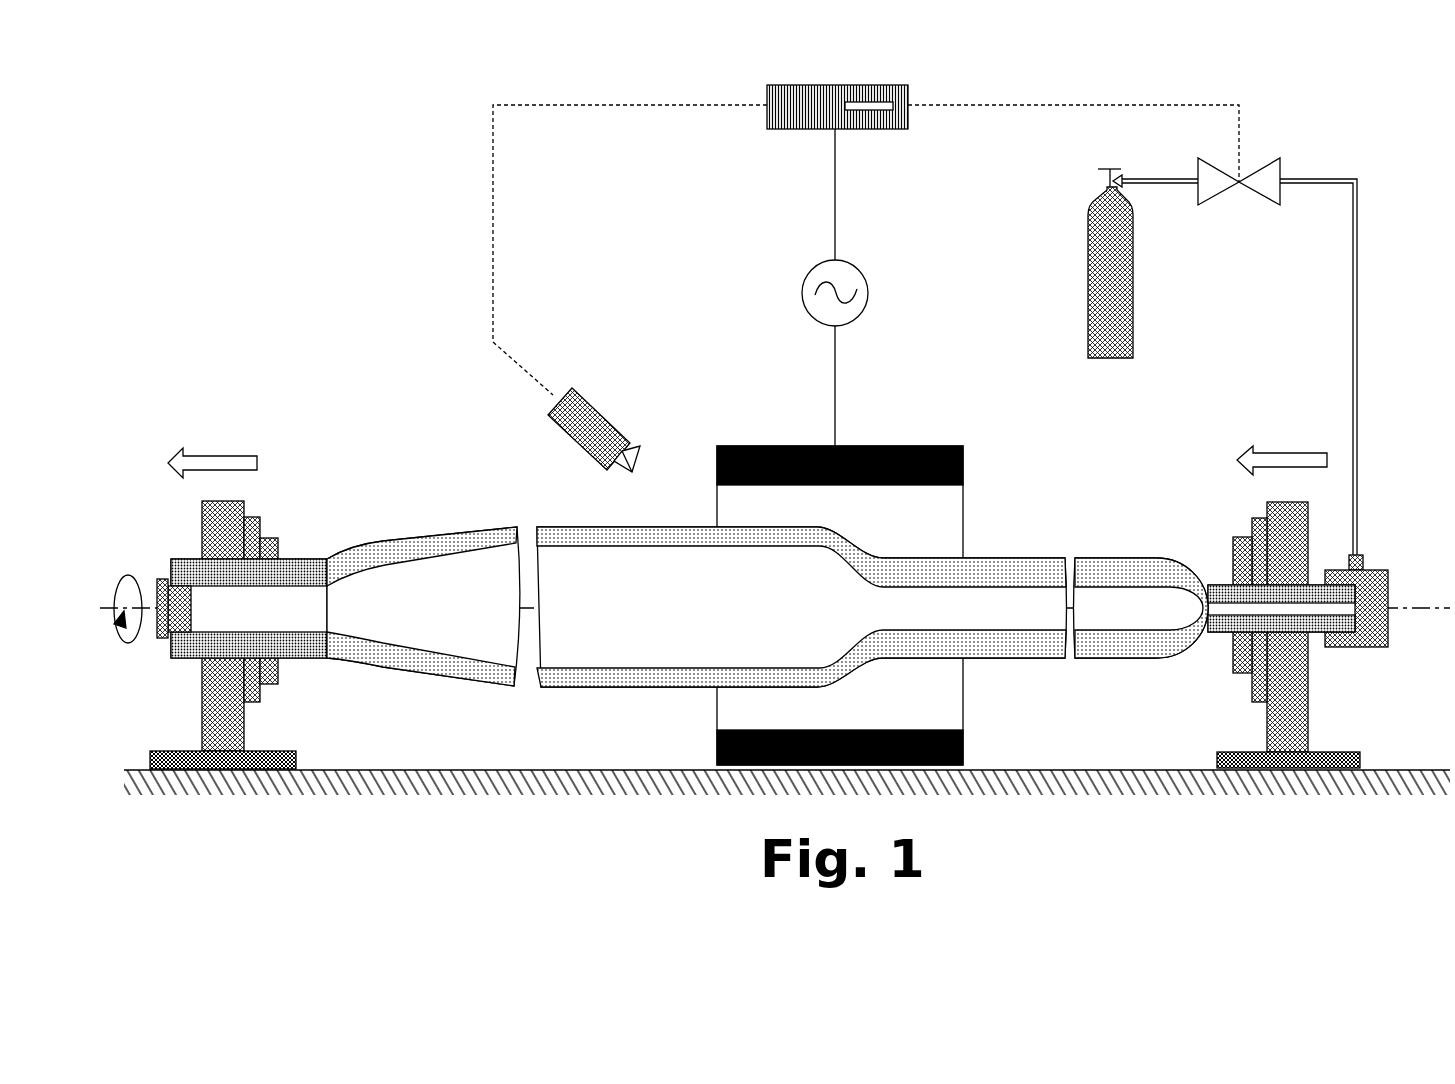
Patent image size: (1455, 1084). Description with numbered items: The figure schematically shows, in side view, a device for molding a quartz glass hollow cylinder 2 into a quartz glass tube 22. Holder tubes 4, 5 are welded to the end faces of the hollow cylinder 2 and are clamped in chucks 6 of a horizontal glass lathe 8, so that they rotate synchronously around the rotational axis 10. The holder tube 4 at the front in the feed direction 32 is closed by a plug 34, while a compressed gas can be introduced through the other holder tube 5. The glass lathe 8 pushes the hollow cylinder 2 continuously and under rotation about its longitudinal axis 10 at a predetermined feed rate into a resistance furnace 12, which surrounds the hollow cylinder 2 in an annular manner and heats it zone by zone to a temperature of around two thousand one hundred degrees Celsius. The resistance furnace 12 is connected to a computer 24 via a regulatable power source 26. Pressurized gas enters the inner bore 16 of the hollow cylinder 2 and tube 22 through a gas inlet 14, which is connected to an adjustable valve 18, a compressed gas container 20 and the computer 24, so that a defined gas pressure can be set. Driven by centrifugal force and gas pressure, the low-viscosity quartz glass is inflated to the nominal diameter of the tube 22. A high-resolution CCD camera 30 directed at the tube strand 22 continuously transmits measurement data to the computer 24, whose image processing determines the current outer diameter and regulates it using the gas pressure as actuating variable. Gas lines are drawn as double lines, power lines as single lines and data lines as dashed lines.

The quartz glass hollow cylinder 2 is at (1097, 565).
The holder tube 4 is at (1312, 630).
The holder tube 5 is at (300, 653).
The chucks 6 is at (262, 518).
The horizontal glass lathe 8 is at (281, 708).
The rotational axis 10 is at (1412, 604).
The resistance furnace 12 is at (918, 444).
The gas inlet 14 is at (1373, 635).
The inner bore 16 is at (782, 588).
The adjustable valve 18 is at (1265, 175).
The compressed gas container 20 is at (1088, 300).
The quartz glass tube 22 is at (465, 545).
The computer 24 is at (815, 130).
The regulatable power source 26 is at (812, 280).
The CCD camera 30 is at (598, 410).
The feed direction 32 is at (210, 460).
The plug 34 is at (143, 558).